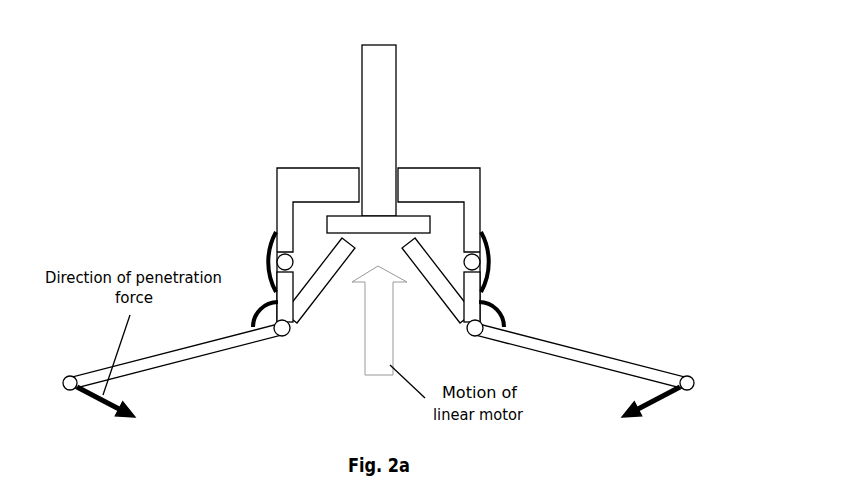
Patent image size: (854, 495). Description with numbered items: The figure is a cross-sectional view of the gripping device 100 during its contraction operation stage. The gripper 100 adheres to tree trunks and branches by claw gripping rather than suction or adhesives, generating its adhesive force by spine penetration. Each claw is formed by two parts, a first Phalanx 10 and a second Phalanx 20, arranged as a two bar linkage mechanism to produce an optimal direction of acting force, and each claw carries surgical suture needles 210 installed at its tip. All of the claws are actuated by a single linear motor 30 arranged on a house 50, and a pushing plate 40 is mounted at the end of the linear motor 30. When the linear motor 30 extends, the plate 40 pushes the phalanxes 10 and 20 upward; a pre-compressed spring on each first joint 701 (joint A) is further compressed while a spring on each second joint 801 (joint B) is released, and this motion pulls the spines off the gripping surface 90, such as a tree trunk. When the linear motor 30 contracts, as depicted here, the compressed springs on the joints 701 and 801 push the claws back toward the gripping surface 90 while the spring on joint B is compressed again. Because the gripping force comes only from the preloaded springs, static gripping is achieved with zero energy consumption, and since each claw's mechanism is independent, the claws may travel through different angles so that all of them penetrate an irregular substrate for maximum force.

The gripping device 100 is at (525, 23).
The linear motor 30 is at (383, 132).
The pushing plate 40 is at (428, 218).
The house 50 is at (275, 167).
The first Phalanx 10 is at (428, 273).
The first joint 701 is at (487, 260).
The second joint 801 is at (483, 320).
The second Phalanx 20 is at (613, 365).
The surgical suture needle 210 is at (67, 378).
The gripping surface 90 is at (495, 352).